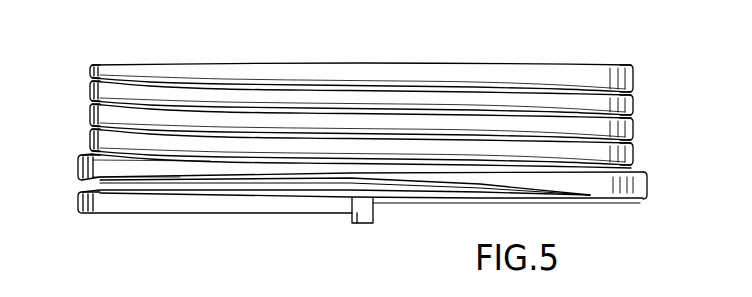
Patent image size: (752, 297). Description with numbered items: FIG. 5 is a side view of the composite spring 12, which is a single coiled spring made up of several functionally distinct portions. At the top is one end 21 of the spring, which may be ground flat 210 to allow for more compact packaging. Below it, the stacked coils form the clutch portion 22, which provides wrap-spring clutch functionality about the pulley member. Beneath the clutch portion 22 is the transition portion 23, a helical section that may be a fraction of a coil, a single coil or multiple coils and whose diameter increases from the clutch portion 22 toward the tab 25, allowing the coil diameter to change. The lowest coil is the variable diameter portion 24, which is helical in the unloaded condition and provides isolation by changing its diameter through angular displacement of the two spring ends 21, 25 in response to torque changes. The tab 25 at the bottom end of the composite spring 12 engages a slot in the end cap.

The composite spring 12 is at (519, 60).
The end 21 is at (90, 68).
The ground flat 210 is at (247, 63).
The clutch portion 22 is at (642, 65).
The transition portion 23 is at (78, 165).
The variable diameter portion 24 is at (648, 184).
The tab 25 is at (375, 213).